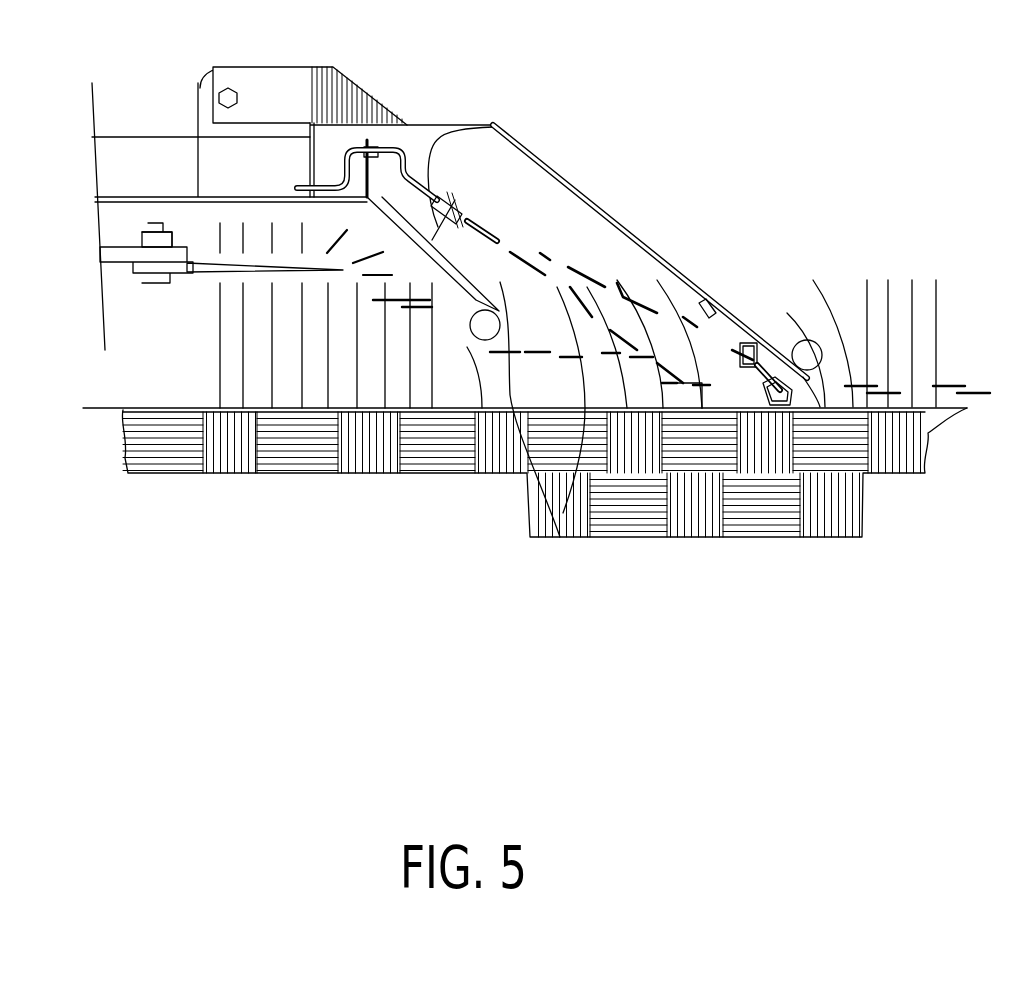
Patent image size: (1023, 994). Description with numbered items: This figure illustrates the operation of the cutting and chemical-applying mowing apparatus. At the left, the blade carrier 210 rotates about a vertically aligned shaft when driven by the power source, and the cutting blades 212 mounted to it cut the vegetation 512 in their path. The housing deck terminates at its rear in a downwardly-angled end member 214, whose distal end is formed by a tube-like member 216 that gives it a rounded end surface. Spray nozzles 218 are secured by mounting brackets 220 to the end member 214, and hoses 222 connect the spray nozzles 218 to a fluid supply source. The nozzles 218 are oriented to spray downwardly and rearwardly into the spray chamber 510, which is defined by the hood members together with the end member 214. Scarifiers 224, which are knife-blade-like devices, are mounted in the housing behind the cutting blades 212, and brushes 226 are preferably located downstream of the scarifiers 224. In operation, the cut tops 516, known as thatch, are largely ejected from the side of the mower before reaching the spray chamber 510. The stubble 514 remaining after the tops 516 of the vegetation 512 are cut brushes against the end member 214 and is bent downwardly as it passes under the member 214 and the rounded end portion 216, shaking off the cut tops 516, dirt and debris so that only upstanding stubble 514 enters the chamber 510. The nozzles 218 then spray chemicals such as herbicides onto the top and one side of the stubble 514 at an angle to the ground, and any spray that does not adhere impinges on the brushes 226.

The blade carrier 210 is at (120, 247).
The cutting blades 212 is at (190, 272).
The downwardly-angled end member 214 is at (478, 282).
The tube-like member 216 is at (501, 328).
The spray nozzles 218 is at (463, 210).
The mounting brackets 220 is at (493, 127).
The hoses 222 is at (407, 157).
The scarifiers 224 is at (697, 380).
The brushes 226 is at (733, 407).
The spray chamber 510 is at (483, 183).
The vegetation 512 is at (220, 367).
The stubble 514 is at (433, 370).
The cut tops 516 is at (540, 280).